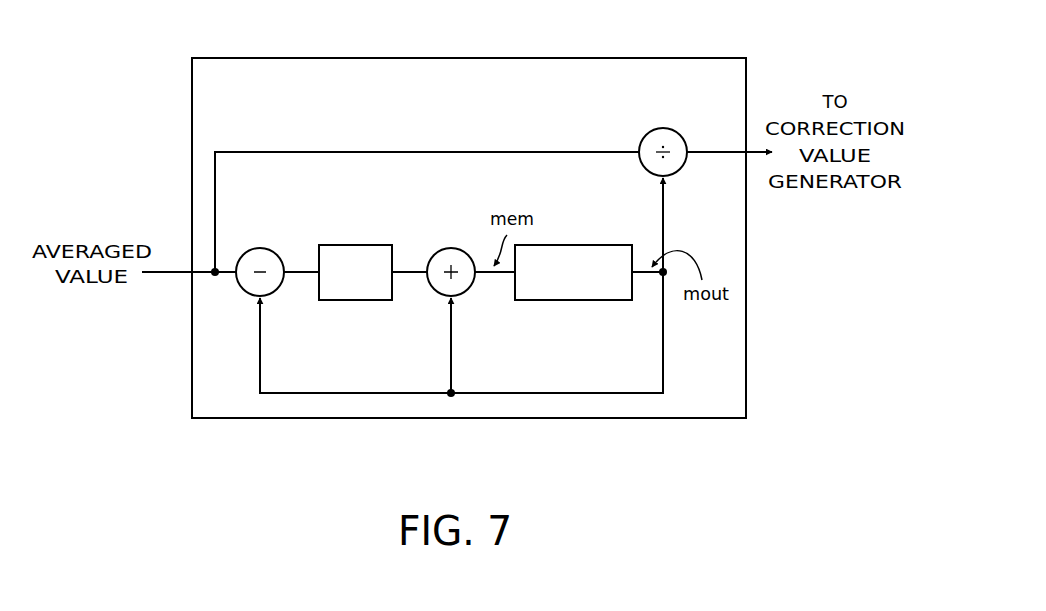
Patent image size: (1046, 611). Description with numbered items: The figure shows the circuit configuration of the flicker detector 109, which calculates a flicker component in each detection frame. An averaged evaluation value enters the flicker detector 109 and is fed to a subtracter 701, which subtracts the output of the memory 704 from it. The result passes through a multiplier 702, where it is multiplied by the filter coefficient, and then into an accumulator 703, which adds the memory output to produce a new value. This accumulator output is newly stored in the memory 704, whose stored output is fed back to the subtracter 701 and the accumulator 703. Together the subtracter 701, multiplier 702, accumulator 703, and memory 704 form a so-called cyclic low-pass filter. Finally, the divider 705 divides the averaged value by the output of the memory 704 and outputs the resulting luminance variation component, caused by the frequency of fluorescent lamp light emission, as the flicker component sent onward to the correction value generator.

The flicker detector 109 is at (412, 58).
The subtracter 701 is at (268, 249).
The multiplier 702 is at (361, 245).
The accumulator 703 is at (438, 291).
The memory 704 is at (577, 245).
The divider 705 is at (669, 129).